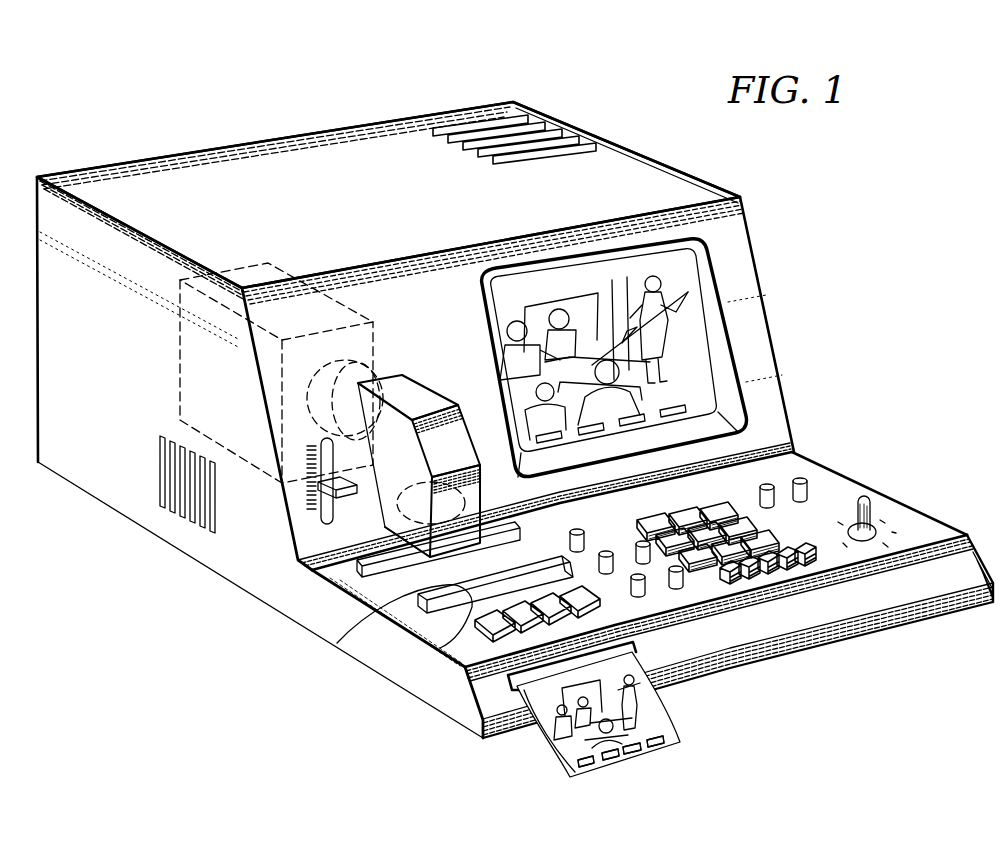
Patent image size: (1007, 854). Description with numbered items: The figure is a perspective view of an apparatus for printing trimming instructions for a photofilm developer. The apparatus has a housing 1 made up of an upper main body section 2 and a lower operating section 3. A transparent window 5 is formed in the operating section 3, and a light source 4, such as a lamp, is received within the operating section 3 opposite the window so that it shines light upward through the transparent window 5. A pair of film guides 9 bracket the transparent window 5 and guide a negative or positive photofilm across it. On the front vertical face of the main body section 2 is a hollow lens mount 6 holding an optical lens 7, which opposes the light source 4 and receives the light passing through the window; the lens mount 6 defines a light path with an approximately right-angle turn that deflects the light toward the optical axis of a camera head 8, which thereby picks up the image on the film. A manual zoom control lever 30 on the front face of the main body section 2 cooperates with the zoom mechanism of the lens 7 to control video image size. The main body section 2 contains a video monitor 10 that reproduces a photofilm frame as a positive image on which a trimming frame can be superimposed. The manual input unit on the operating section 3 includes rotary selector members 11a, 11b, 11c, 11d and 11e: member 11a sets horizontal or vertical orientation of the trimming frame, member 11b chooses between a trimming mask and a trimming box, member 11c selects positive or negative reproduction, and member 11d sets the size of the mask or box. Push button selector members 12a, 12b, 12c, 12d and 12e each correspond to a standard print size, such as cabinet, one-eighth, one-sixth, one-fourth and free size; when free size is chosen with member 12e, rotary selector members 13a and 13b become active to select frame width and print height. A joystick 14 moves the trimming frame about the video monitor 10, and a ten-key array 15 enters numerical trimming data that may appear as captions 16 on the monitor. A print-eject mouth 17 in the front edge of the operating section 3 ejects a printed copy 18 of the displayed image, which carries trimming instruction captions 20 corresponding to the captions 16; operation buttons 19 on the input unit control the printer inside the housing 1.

The housing 1 is at (300, 133).
The main body section 2 is at (683, 185).
The operating section 3 is at (918, 523).
The light source 4 is at (338, 646).
The transparent window 5 is at (356, 599).
The lens mount 6 is at (412, 387).
The optical lens 7 is at (395, 525).
The camera head 8 is at (180, 398).
The film guides 9 is at (440, 648).
The video monitor 10 is at (688, 292).
The rotary selector member 11a is at (641, 593).
The rotary selector member 11b is at (680, 586).
The rotary selector member 11c is at (608, 570).
The rotary selector member 11d is at (640, 543).
The rotary selector member 11e is at (571, 533).
The push button selector member 12a is at (736, 585).
The push button selector member 12b is at (752, 580).
The push button selector member 12c is at (770, 575).
The push button selector member 12d is at (789, 570).
The push button selector member 12e is at (818, 557).
The rotary selector member 13a is at (777, 491).
The rotary selector member 13b is at (808, 488).
The joystick 14 is at (867, 500).
The ten-key array 15 is at (713, 508).
The captions 16 is at (594, 359).
The print-eject mouth 17 is at (517, 696).
The printed copy 18 is at (560, 740).
The operation buttons 19 is at (497, 634).
The trimming instruction captions 20 is at (639, 763).
The manual zoom control lever 30 is at (322, 487).